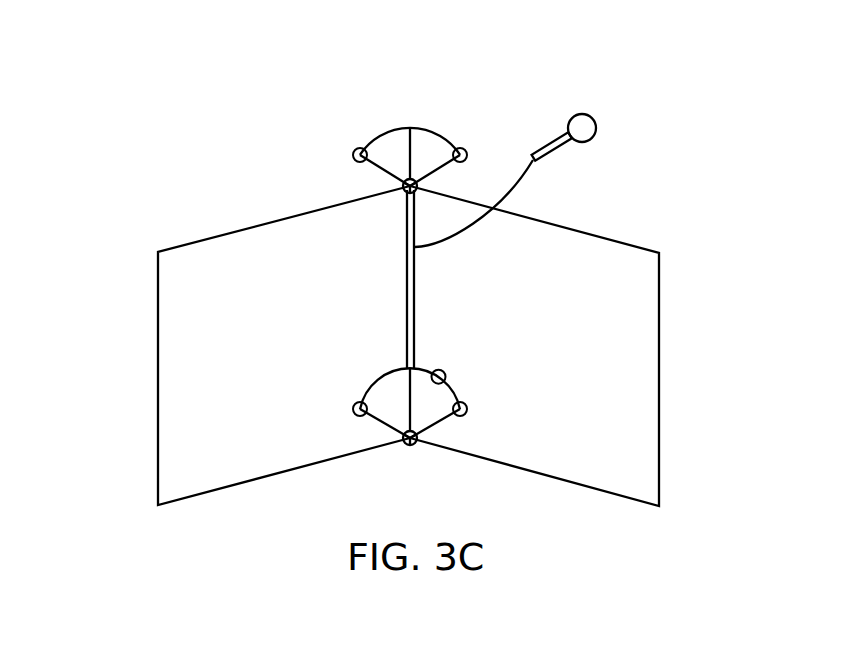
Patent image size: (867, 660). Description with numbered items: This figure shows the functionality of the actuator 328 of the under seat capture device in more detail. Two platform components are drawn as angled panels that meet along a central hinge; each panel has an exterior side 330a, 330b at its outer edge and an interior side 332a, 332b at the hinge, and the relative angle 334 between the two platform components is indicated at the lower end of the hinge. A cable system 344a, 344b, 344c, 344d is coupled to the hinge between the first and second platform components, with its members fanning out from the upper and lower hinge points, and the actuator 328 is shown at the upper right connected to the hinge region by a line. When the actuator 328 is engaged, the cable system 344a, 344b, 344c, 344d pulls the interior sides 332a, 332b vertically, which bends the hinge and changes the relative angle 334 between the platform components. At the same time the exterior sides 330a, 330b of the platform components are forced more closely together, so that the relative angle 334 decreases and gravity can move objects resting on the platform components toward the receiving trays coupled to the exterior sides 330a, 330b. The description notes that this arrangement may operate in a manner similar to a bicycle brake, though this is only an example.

The actuator 328 is at (598, 125).
The exterior side of first platform component 330a is at (172, 417).
The exterior side of second platform component 330b is at (645, 417).
The interior side of first platform component 332a is at (400, 332).
The interior side of second platform component 332b is at (423, 332).
The relative angle 334 is at (424, 456).
The cable system cable 344a is at (366, 461).
The cable system cable 344b is at (365, 208).
The cable system cable 344c is at (452, 208).
The cable system cable 344d is at (473, 458).